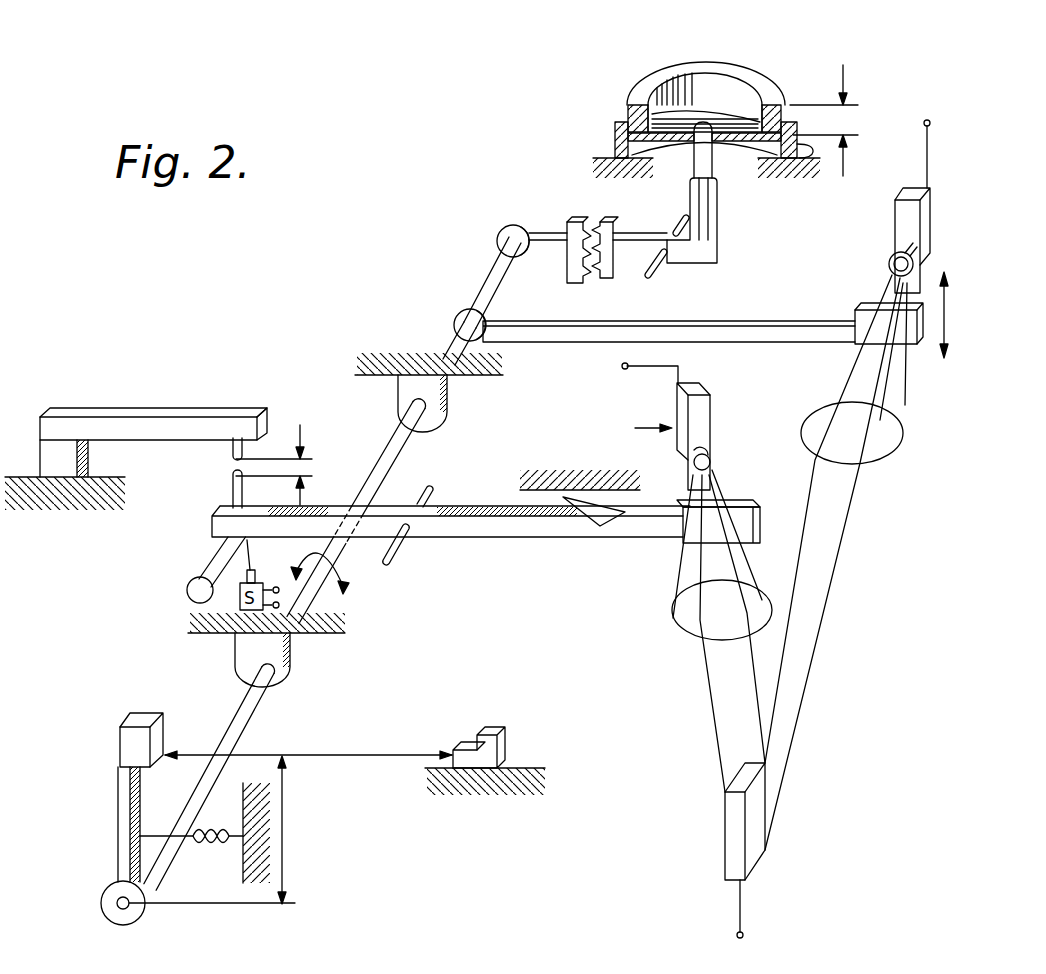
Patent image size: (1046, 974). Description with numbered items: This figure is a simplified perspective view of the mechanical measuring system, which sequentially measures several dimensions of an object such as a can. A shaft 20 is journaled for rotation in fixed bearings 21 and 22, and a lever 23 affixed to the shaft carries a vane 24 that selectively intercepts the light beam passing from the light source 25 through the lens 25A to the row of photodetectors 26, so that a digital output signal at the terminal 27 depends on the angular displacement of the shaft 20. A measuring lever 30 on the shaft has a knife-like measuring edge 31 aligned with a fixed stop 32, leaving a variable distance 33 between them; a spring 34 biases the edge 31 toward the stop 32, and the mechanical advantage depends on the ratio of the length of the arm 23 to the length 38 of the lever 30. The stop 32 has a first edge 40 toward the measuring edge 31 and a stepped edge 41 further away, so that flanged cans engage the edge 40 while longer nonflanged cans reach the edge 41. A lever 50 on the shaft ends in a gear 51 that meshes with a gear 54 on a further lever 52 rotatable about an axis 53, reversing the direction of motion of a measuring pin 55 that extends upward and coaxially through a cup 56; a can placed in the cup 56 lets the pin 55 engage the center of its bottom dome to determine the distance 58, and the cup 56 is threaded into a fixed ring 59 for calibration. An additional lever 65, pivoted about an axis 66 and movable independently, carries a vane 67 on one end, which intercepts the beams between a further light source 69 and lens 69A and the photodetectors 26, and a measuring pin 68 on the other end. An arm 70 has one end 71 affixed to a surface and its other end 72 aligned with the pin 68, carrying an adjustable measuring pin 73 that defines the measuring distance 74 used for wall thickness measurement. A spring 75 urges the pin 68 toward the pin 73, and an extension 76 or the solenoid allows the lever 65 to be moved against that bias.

The shaft 20 is at (327, 600).
The bearing 21 is at (432, 418).
The bearing 22 is at (283, 684).
The lever 23 is at (758, 322).
The vane 24 is at (920, 346).
The light source 25 is at (895, 224).
The lens 25A is at (893, 249).
The row of photodetectors 26 is at (753, 818).
The output signal terminal 27 is at (745, 937).
The measuring lever 30 is at (118, 808).
The measuring edge 31 is at (163, 720).
The fixed stop 32 is at (503, 740).
The variable distance 33 is at (373, 760).
The spring 34 is at (200, 838).
The length of the arm 38 is at (284, 858).
The first edge 40 is at (453, 748).
The stepped edge 41 is at (478, 740).
The lever 50 is at (547, 250).
The gear 51 is at (575, 218).
The further lever 52 is at (632, 240).
The axis 53 is at (658, 272).
The gear 54 is at (605, 220).
The measuring pin 55 is at (709, 228).
The cup 56 is at (723, 113).
The distance 58 is at (858, 120).
The fixed threaded ring 59 is at (803, 163).
The additional lever 65 is at (530, 538).
The axis 66 is at (395, 556).
The vane 67 is at (764, 507).
The measuring pin 68 is at (233, 492).
The further light source 69 is at (700, 423).
The lens 69A is at (631, 424).
The arm 70 is at (150, 407).
The arm end 71 is at (40, 432).
The arm end 72 is at (267, 418).
The measuring pin 73 is at (230, 452).
The measuring distance 74 is at (303, 468).
The spring 75 is at (563, 497).
The extension 76 is at (218, 561).